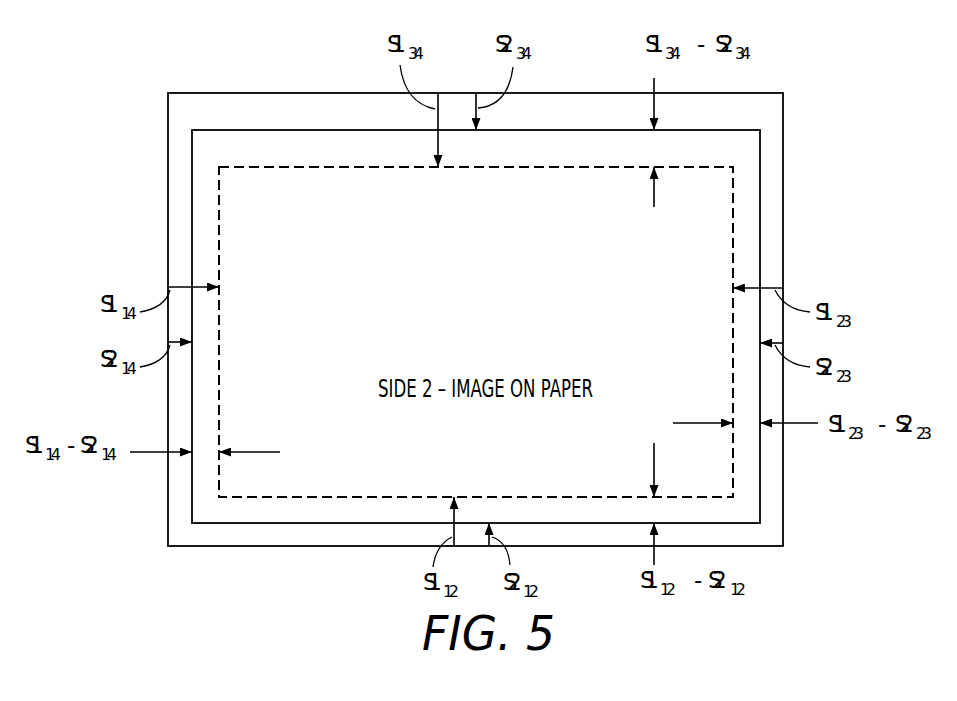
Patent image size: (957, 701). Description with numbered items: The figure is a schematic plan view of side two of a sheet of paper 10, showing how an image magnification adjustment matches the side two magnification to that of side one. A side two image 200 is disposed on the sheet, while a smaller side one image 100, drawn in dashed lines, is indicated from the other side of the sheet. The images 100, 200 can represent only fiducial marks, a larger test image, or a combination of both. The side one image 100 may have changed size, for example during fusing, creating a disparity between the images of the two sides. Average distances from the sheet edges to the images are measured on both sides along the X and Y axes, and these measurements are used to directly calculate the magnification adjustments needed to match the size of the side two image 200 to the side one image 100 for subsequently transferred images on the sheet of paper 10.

The sheet of paper 10 is at (287, 532).
The side 1 image 100 is at (733, 205).
The side 2 image 200 is at (760, 148).